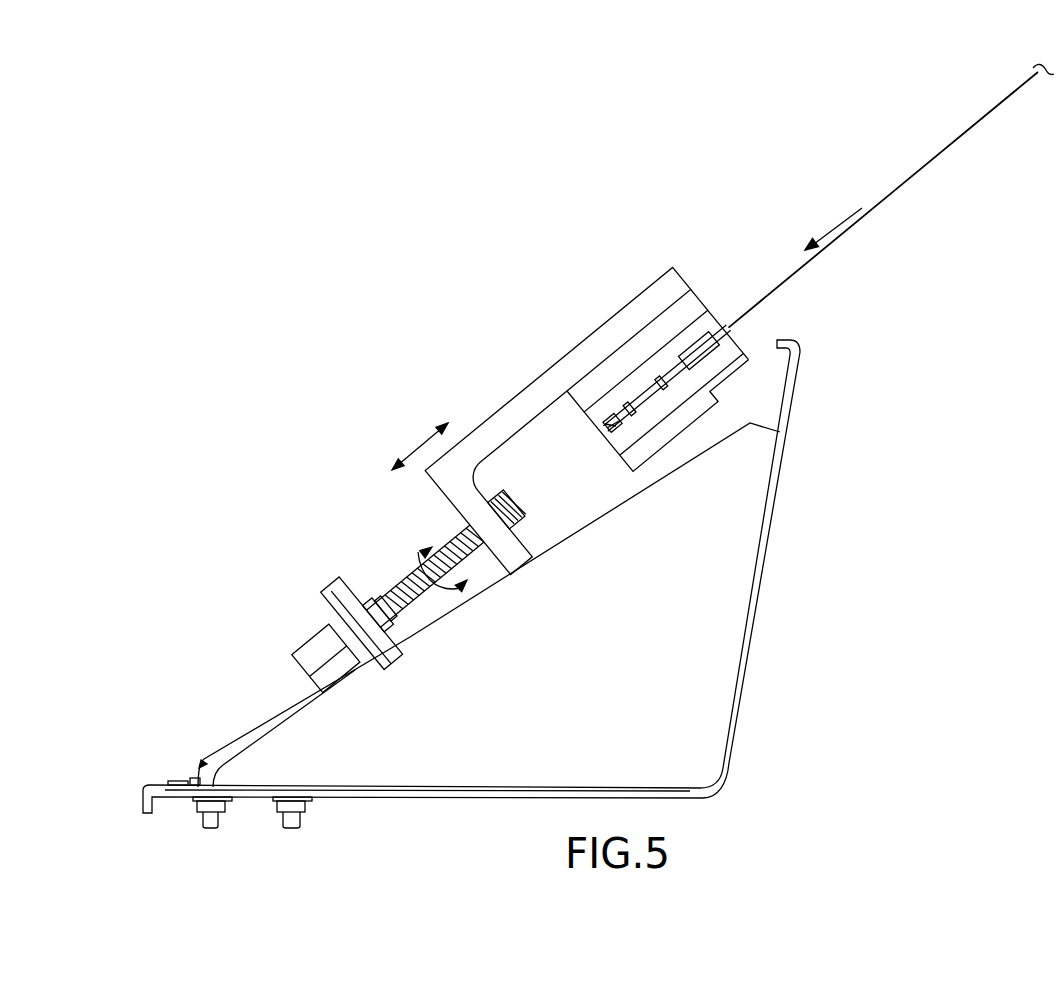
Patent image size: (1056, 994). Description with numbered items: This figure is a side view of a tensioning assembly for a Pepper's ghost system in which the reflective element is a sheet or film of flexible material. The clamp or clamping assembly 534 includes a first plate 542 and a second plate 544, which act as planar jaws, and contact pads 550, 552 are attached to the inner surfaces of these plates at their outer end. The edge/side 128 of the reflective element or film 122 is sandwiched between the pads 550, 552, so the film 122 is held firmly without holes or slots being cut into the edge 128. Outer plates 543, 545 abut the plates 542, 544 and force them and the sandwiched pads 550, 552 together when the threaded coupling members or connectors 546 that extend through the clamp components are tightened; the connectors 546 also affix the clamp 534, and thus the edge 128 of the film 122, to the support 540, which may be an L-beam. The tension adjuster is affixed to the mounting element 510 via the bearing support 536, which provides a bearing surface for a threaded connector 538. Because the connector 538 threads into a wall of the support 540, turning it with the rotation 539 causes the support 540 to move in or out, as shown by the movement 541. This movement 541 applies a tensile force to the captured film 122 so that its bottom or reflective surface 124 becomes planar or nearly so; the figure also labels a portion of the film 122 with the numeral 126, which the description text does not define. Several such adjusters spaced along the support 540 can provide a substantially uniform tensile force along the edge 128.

The mounting element 510 is at (780, 527).
The reflective element or film 122 is at (892, 195).
The bottom or reflective surface 124 is at (875, 225).
The wire insulation 126 is at (883, 197).
The edge/side of the film 128 is at (747, 318).
The clamp or clamping assembly 534 is at (278, 378).
The bearing support 536 is at (330, 580).
The threaded member or connector 538 is at (298, 647).
The rotation 539 is at (422, 554).
The support 540 is at (530, 388).
The movement 541 is at (420, 447).
The first plate 542 is at (713, 317).
The outer plate/member 543 is at (573, 396).
The second plate 544 is at (742, 342).
The outer plate/member 545 is at (628, 470).
The threaded coupling members or connectors 546 is at (602, 430).
The contact pad 550 is at (730, 323).
The contact pad 552 is at (732, 329).